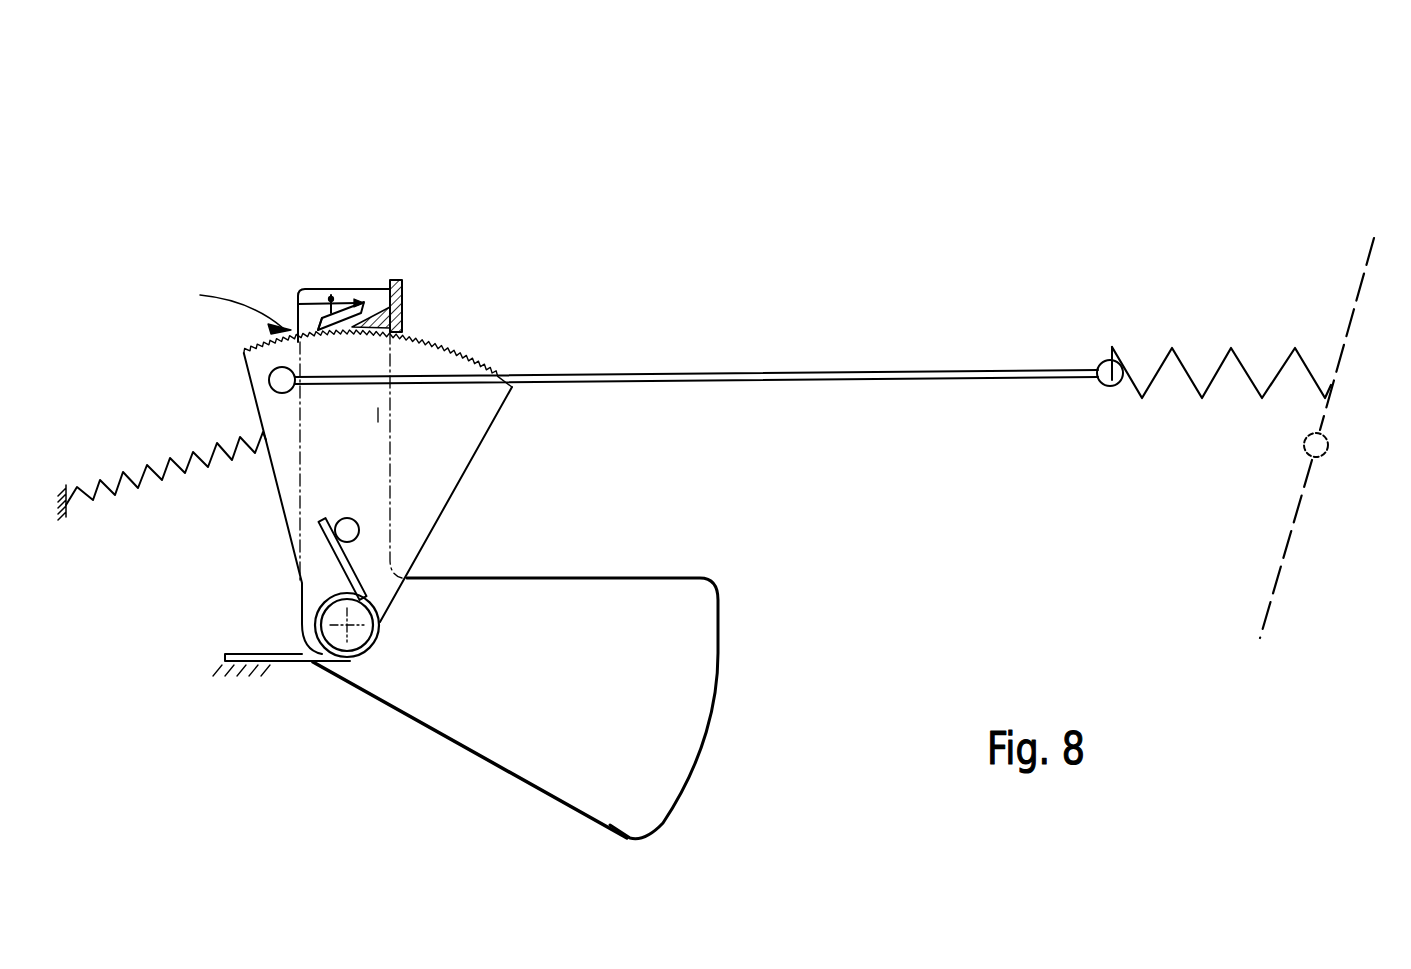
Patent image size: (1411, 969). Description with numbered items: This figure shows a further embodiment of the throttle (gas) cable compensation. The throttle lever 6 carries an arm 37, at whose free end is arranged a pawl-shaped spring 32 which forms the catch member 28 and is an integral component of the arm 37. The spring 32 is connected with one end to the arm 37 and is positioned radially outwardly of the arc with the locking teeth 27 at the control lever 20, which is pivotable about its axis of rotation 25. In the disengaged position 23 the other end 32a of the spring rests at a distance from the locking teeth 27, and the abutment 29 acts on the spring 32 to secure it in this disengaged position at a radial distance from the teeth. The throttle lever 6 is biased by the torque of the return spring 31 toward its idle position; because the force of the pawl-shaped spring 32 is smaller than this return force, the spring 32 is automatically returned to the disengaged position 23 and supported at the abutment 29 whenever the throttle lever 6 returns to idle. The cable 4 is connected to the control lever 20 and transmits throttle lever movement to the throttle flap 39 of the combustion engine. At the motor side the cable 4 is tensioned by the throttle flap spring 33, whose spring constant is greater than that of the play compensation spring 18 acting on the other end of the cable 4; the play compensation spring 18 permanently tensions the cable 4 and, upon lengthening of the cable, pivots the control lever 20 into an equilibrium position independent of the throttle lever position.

The cable 4 is at (822, 375).
The throttle lever 6 is at (670, 695).
The play compensation spring 18 is at (160, 480).
The control lever 20 is at (447, 457).
The disengaged position 23 is at (231, 310).
The axis of rotation 25 is at (350, 628).
The locking teeth 27 is at (443, 355).
The catch member 28 is at (331, 293).
The abutment 29 is at (403, 312).
The return spring 31 is at (353, 661).
The pawl-shaped spring 32 is at (355, 308).
The other end of the pawl-shaped spring 32a is at (298, 320).
The throttle flap spring 33 is at (1223, 360).
The arm 37 is at (380, 415).
The throttle flap 39 is at (1283, 556).